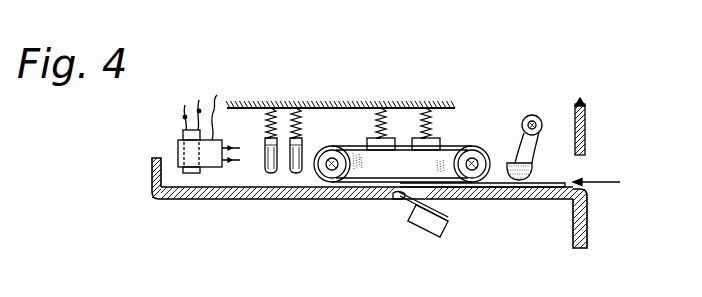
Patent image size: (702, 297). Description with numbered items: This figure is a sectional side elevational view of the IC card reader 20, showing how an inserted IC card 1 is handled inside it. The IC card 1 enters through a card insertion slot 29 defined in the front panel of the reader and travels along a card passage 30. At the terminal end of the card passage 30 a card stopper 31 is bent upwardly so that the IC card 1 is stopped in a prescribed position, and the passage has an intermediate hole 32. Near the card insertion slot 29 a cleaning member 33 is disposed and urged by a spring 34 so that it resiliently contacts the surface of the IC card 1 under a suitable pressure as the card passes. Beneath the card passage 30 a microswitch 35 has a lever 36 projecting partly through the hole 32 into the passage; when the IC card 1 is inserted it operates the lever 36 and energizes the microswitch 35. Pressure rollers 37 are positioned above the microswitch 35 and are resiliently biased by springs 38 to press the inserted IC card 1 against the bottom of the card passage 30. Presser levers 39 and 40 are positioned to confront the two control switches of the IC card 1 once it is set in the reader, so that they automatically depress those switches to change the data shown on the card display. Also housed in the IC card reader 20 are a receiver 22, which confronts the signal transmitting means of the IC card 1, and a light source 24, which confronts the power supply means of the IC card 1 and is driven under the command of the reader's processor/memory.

The IC card 1 is at (560, 176).
The IC card reader 20 is at (389, 88).
The receiver 22 is at (178, 137).
The light source 24 is at (207, 106).
The card insertion slot 29 is at (587, 160).
The card passage 30 is at (292, 201).
The card stopper 31 is at (152, 182).
The hole 32 is at (388, 201).
The cleaning member 33 is at (552, 176).
The spring 34 is at (512, 160).
The microswitch 35 is at (427, 237).
The lever 36 is at (412, 204).
The pressure rollers 37 is at (332, 146).
The springs 38 is at (413, 108).
The presser lever 39 is at (265, 144).
The presser lever 40 is at (302, 146).